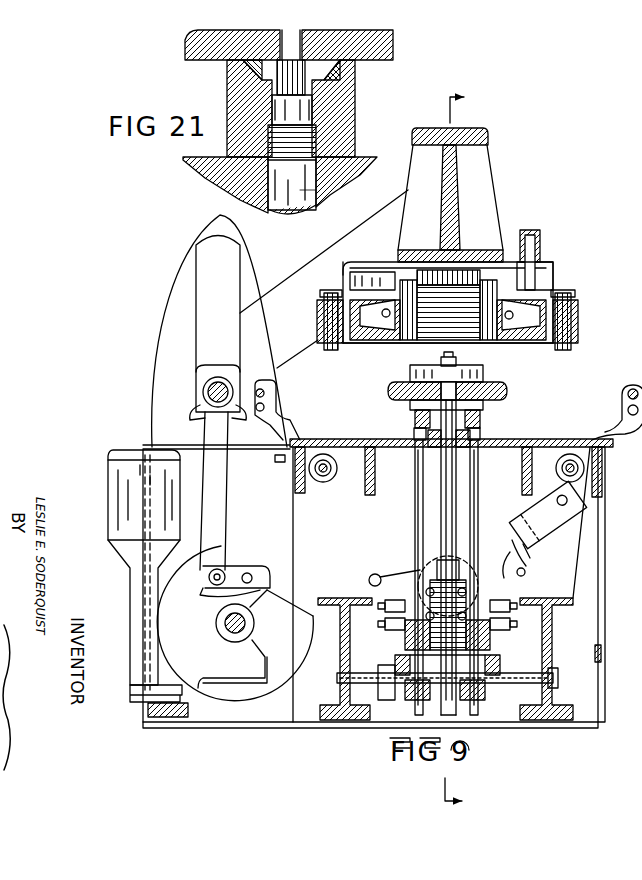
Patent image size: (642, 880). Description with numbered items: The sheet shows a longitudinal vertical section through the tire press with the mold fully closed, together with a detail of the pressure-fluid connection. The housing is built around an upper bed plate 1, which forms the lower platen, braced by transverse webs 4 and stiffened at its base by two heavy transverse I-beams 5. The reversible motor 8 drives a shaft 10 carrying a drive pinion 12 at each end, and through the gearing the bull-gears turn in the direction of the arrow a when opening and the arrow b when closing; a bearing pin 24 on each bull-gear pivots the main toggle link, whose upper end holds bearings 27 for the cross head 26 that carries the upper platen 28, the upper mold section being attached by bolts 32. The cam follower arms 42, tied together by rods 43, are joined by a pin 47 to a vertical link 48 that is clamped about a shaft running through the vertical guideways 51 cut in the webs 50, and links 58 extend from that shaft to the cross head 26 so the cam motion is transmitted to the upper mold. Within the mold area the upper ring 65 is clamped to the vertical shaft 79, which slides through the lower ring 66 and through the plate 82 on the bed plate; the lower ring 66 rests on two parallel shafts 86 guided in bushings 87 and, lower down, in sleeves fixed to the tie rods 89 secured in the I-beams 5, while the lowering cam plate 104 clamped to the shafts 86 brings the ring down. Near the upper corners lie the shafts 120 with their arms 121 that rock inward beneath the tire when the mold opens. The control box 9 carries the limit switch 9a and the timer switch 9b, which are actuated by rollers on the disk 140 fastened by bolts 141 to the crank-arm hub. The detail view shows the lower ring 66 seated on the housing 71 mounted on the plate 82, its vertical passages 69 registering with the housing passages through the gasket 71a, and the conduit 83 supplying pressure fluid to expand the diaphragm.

In FIG. 21, the vertical passages 69 is at (306, 44).
In FIG. 21, the housings 71 is at (342, 100).
In FIG. 21, the gasket 71a is at (342, 72).
In FIG. 21, the plate 82 is at (198, 184).
In FIG. 9, the plate 82 is at (472, 440).
In FIG. 21, the conduit 83 is at (310, 177).
In FIG. 21, the lower ring 66 is at (185, 46).
In FIG. 9, the lower ring 66 is at (508, 392).
In FIG. 9, the shaft 10 is at (212, 643).
In FIG. 9, the cross head 26 is at (487, 141).
In FIG. 9, the bearings 27 is at (492, 286).
In FIG. 9, the upper platen 28 is at (526, 344).
In FIG. 9, the bolts 32 is at (565, 294).
In FIG. 9, the vertical guideways 51 is at (263, 297).
In FIG. 9, the links 58 is at (378, 227).
In FIG. 9, the vertical webs 50 is at (284, 407).
In FIG. 9, the vertical link 48 is at (226, 502).
In FIG. 9, the arms 42 is at (235, 572).
In FIG. 9, the rods 43 is at (252, 574).
In FIG. 9, the pin 47 is at (199, 586).
In FIG. 9, the motor 8 is at (108, 555).
In FIG. 9, the upper bed plate 1 is at (565, 455).
In FIG. 9, the bearing pin 24 is at (605, 584).
In FIG. 9, the transverse webs 4 is at (377, 482).
In FIG. 9, the shafts 120 is at (323, 482).
In FIG. 9, the arms 121 is at (330, 440).
In FIG. 9, the drive pinion 12 is at (617, 419).
In FIG. 9, the upper ring 65 is at (484, 379).
In FIG. 9, the bushings 87 is at (491, 426).
In FIG. 9, the vertical shaft 79 is at (450, 476).
In FIG. 9, the parallel shafts 86 is at (480, 478).
In FIG. 9, the bolts 141 is at (430, 563).
In FIG. 9, the disk 140 is at (380, 578).
In FIG. 9, the arrow a is at (510, 562).
In FIG. 9, the arrow b is at (506, 520).
In FIG. 9, the plate 104 is at (496, 643).
In FIG. 9, the tie rods 89 is at (512, 685).
In FIG. 9, the transverse I-beams 5 is at (349, 635).
In FIG. 9, the control box 9 is at (545, 527).
In FIG. 9, the limit switch 9a is at (530, 506).
In FIG. 9, the switch 9b is at (522, 552).